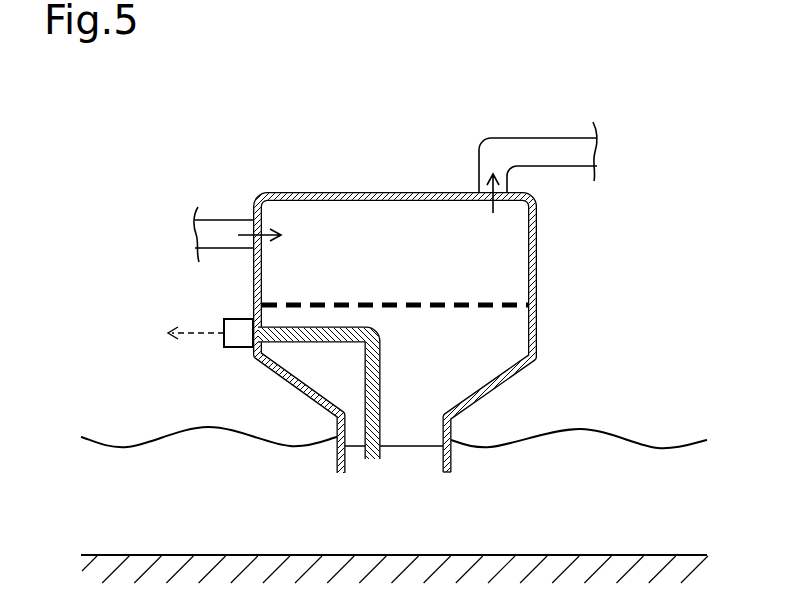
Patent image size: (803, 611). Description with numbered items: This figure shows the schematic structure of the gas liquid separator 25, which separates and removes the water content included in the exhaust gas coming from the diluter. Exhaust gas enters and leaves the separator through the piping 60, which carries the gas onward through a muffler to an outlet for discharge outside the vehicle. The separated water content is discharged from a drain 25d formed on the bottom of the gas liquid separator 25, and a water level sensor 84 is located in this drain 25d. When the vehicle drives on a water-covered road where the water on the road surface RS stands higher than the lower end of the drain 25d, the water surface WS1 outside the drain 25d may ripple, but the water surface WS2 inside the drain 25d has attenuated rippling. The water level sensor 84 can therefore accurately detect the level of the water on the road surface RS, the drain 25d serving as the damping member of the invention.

The piping 60 is at (230, 220).
The gas liquid separator 25 is at (539, 277).
The water level sensor 84 is at (382, 358).
The water surface WS1 is at (580, 430).
The water surface WS2 is at (403, 445).
The drain 25d is at (453, 473).
The road surface RS is at (678, 555).